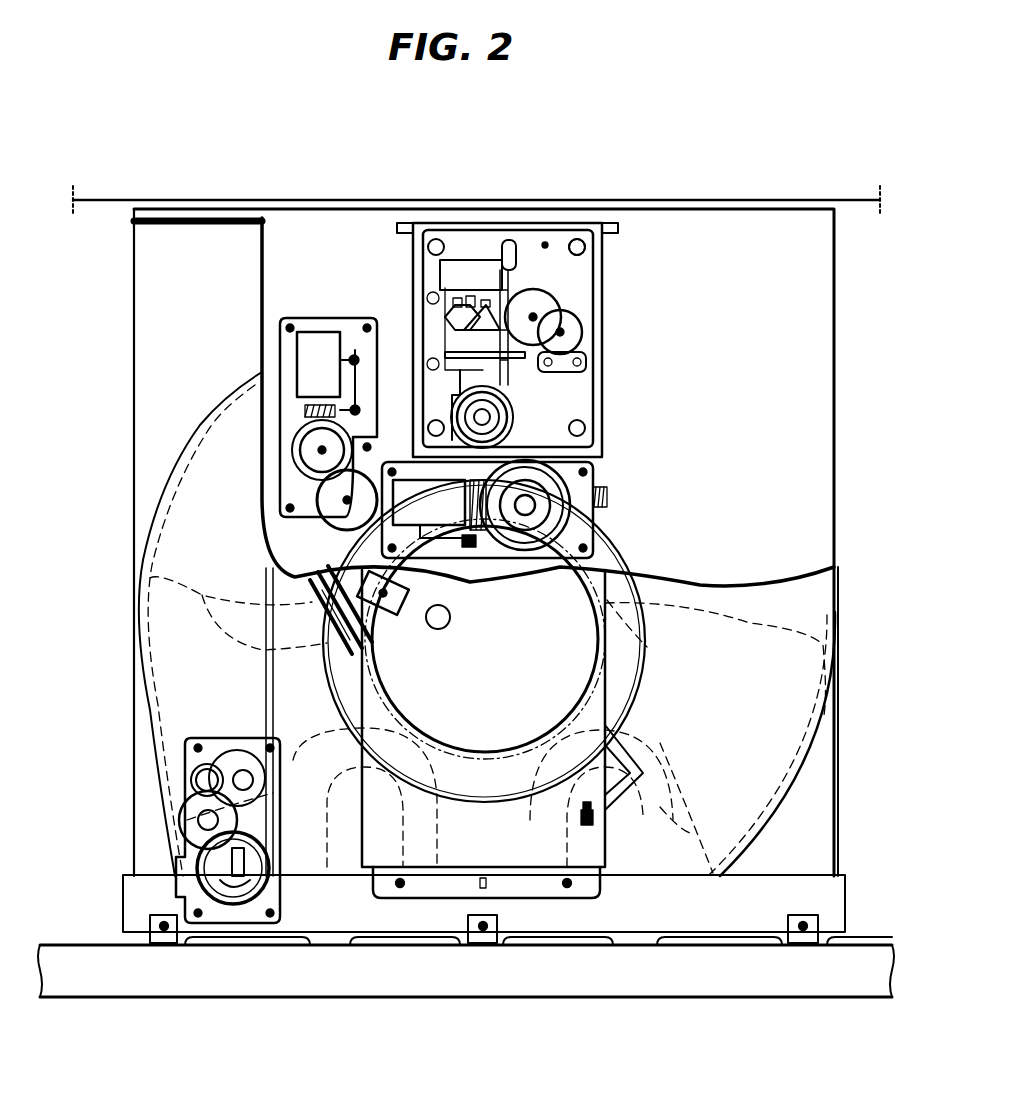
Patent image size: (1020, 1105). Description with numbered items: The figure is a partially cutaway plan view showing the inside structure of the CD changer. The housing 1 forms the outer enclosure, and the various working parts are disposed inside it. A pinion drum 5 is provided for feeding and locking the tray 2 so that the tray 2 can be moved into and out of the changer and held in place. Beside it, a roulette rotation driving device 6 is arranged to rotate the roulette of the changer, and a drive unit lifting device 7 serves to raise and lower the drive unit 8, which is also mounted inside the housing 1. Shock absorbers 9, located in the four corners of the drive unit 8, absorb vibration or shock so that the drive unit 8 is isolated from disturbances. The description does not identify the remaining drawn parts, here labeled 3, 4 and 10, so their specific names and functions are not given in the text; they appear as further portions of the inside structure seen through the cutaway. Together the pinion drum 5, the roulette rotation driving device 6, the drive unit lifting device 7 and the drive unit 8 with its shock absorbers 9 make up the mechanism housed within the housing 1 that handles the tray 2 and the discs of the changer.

The housing 1 is at (700, 200).
The tray 2 is at (810, 820).
The suction chamber block 3 is at (448, 853).
The dust cup 4 is at (800, 605).
The pinion drum 5 is at (190, 865).
The roulette rotation driving device 6 is at (287, 490).
The drive unit lifting device 7 is at (595, 463).
The drive unit 8 is at (478, 242).
The shock absorbers 9 is at (570, 243).
The cover 10 is at (780, 393).